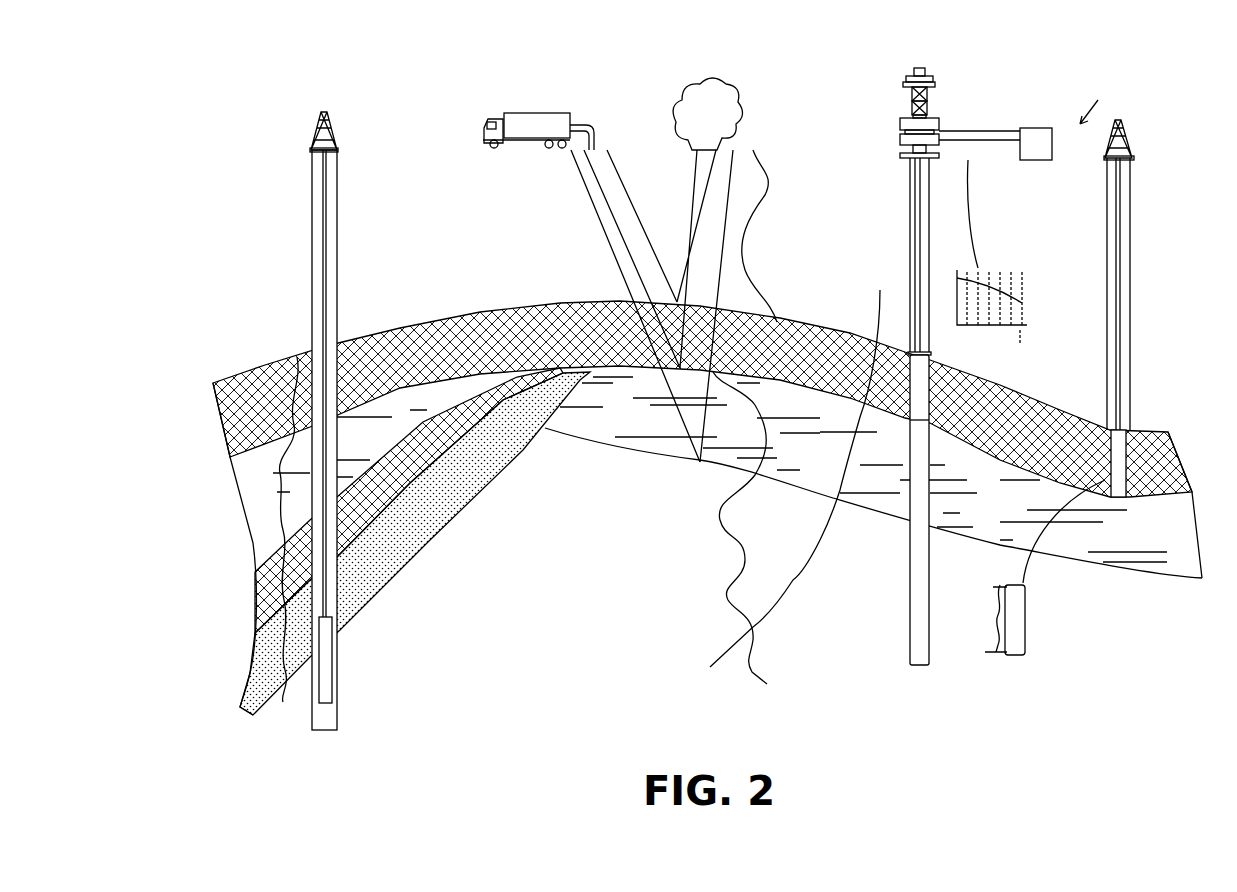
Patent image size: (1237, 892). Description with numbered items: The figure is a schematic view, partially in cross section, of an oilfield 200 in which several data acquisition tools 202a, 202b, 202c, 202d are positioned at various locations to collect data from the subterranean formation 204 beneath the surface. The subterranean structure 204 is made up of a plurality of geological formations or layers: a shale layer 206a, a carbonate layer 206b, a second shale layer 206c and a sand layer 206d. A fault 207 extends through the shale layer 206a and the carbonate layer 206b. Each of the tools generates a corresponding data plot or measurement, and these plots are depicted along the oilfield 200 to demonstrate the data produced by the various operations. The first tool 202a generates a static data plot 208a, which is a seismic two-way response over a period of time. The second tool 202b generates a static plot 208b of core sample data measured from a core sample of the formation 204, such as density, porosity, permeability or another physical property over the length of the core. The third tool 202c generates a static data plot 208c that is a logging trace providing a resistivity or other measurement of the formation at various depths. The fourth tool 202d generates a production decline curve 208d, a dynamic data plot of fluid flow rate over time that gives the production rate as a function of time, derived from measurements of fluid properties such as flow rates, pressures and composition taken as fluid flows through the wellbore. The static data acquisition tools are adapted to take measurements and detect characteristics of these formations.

The oilfield 200 is at (1097, 100).
The data acquisition tool 202a is at (505, 113).
The data acquisition tool 202b is at (1125, 496).
The data acquisition tool 202c is at (330, 665).
The data acquisition tool 202d is at (905, 405).
The subterranean formation 204 is at (596, 530).
The shale layer 206a is at (536, 358).
The carbonate layer 206b is at (381, 448).
The shale layer 206c is at (438, 461).
The sand layer 206d is at (490, 475).
The fault 207 is at (878, 303).
The static data plot 208a is at (741, 557).
The static data plot 208b is at (1000, 598).
The static data plot 208c is at (280, 487).
The production decline curve 208d is at (990, 328).